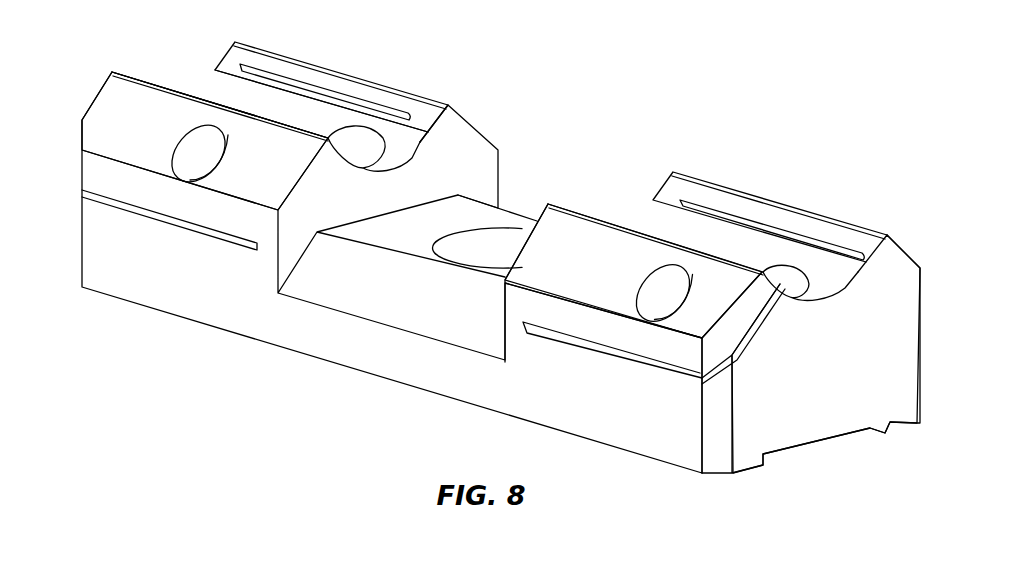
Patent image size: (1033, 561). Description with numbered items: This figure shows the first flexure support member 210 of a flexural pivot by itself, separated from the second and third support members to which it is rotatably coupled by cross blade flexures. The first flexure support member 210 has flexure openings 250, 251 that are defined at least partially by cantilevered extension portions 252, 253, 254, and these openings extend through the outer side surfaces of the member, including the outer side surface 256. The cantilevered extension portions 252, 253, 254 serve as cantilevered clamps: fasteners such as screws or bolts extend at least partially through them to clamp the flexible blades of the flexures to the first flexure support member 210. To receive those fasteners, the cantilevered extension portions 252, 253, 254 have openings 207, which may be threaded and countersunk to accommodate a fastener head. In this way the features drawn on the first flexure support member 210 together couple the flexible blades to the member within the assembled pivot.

The first flexure support member 210 is at (592, 70).
The opening 207 is at (195, 147).
The flexure opening 250 is at (260, 75).
The flexure opening 251 is at (135, 213).
The cantilevered extension portion 252 is at (113, 102).
The cantilevered extension portion 253 is at (208, 90).
The cantilevered extension portion 254 is at (327, 77).
The outer side surface 256 is at (602, 383).